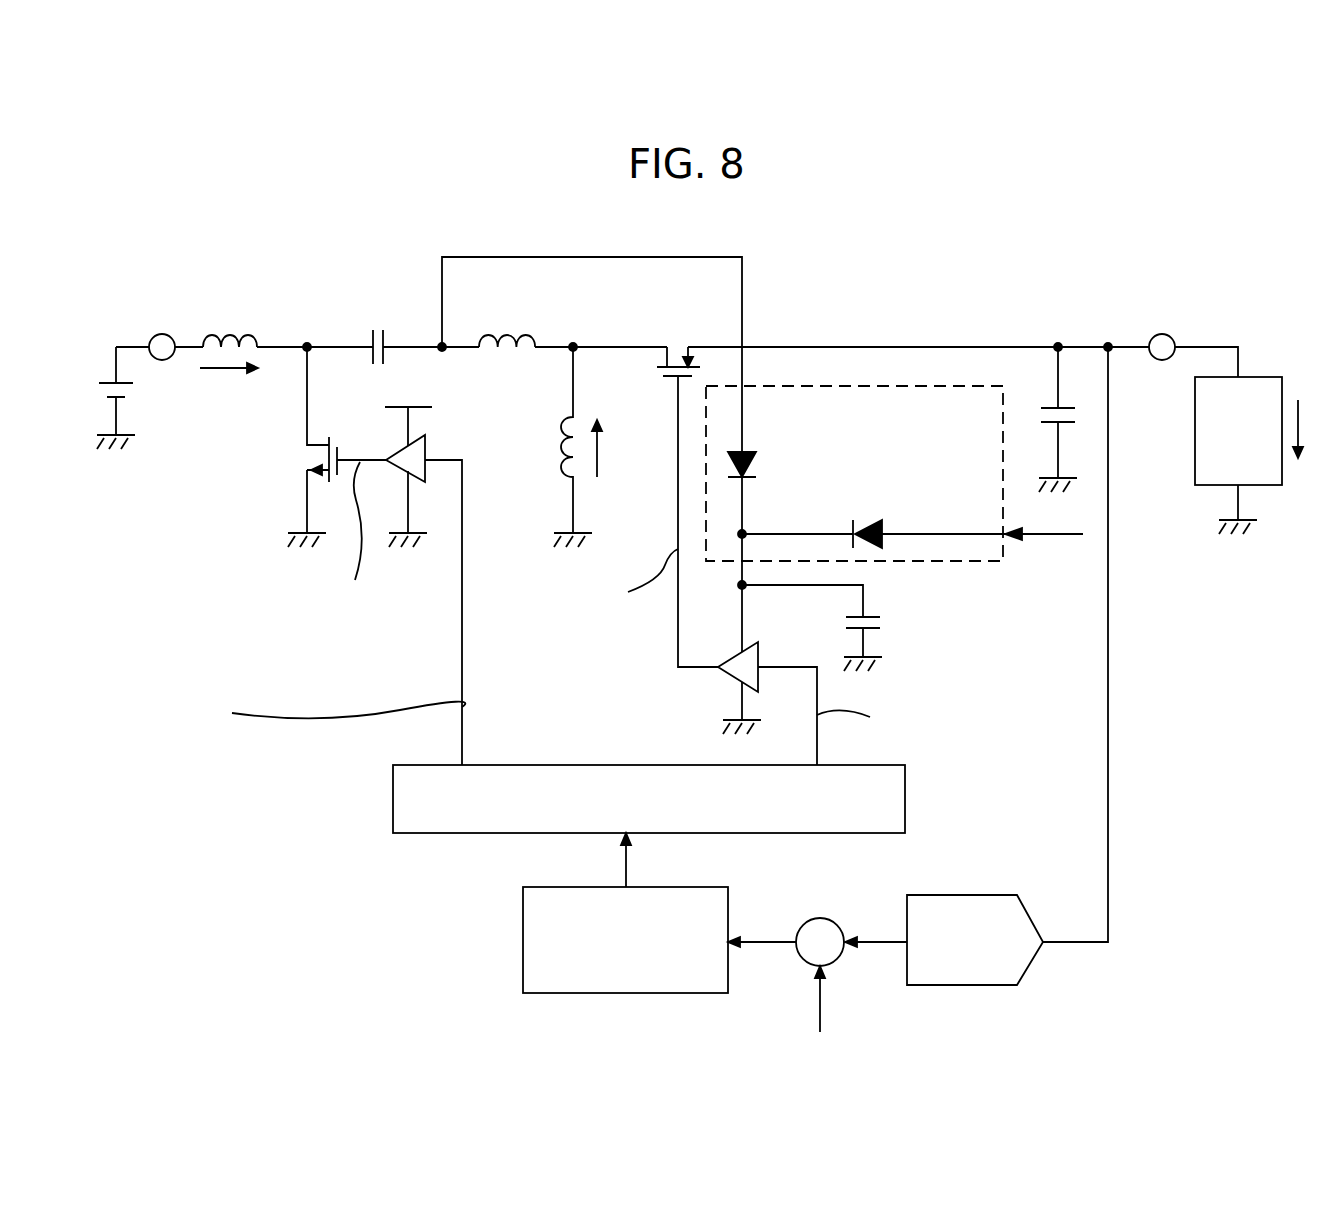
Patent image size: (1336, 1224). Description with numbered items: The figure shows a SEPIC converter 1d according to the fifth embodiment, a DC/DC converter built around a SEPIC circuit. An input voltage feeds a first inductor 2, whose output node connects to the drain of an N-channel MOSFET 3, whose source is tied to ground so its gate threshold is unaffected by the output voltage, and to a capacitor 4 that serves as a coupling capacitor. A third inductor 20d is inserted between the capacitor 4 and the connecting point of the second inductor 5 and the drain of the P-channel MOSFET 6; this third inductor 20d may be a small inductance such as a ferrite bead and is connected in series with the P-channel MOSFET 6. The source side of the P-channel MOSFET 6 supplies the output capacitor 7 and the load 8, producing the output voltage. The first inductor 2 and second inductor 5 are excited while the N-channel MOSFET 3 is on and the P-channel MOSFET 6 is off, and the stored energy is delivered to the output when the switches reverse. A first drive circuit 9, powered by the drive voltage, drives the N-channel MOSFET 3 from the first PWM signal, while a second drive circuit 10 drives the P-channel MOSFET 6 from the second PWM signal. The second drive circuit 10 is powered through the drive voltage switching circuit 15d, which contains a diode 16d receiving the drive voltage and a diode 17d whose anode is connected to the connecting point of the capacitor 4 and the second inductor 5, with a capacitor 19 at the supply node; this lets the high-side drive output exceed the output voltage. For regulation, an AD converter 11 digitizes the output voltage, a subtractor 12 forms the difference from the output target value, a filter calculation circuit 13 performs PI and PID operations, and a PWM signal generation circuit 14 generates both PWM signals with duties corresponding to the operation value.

The SEPIC converter 1d is at (710, 237).
The first inductor 2 is at (230, 330).
The N-channel MOSFET 3 is at (312, 460).
The capacitor 4 is at (372, 330).
The second inductor 5 is at (582, 473).
The P-channel MOSFET 6 is at (678, 340).
The output capacitor 7 is at (1065, 407).
The load 8 is at (1260, 377).
The first drive circuit 9 is at (397, 452).
The second drive circuit 10 is at (730, 678).
The AD converter 11 is at (990, 895).
The subtractor 12 is at (832, 915).
The filter calculation circuit 13 is at (553, 993).
The PWM signal generation circuit 14 is at (393, 800).
The drive voltage switching circuit 15d is at (968, 565).
The diode 16d is at (875, 520).
The diode 17d is at (752, 450).
The capacitor 19 is at (882, 623).
The third inductor 20d is at (513, 335).